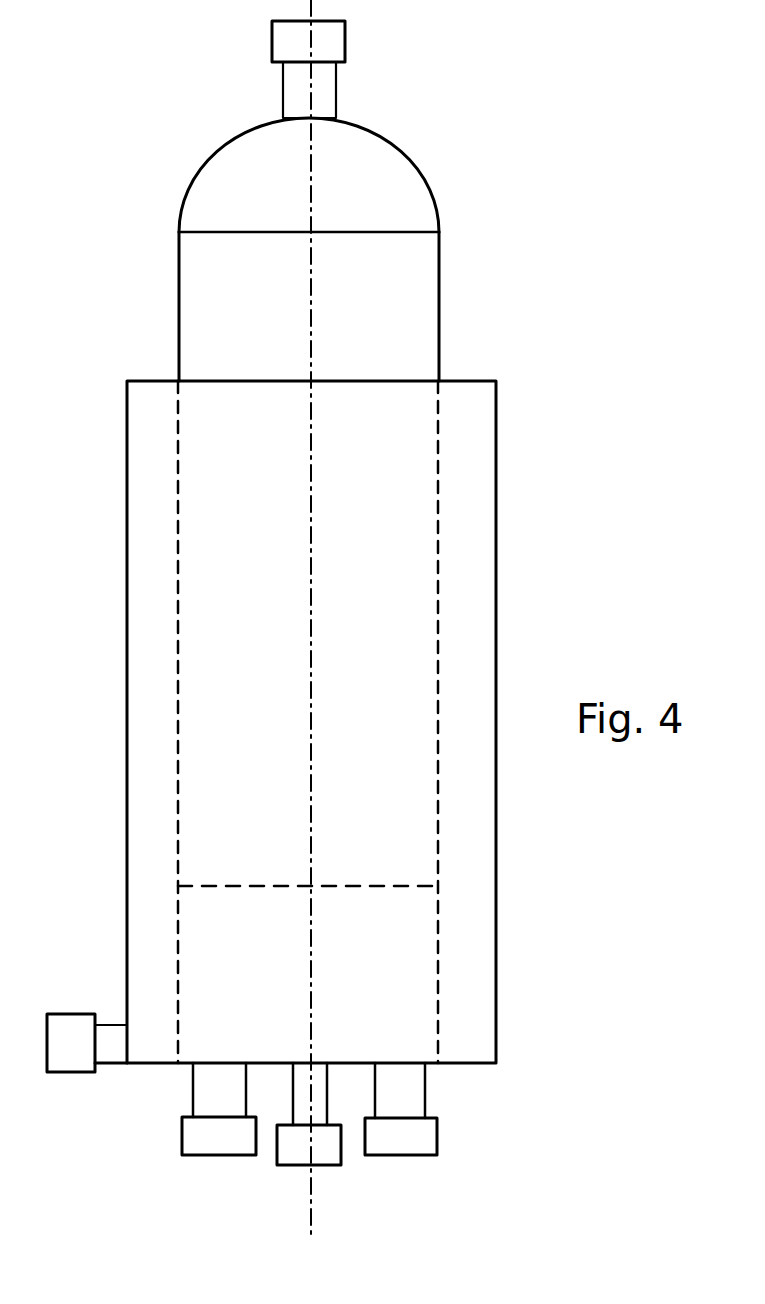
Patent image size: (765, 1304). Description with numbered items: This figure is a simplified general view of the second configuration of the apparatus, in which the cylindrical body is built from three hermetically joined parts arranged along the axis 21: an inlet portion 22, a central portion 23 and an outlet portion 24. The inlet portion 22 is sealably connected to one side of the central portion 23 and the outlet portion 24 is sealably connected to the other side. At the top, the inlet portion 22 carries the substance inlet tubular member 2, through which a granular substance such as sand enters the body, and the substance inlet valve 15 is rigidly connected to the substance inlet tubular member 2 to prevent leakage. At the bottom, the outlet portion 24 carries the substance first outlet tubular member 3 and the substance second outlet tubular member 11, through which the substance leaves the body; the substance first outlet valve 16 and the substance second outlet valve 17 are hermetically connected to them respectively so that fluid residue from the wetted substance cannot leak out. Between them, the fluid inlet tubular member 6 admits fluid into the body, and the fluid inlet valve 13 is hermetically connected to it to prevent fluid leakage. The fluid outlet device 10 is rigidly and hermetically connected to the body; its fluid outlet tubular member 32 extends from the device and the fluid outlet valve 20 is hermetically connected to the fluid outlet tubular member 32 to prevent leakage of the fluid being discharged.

The substance inlet tubular member 2 is at (326, 100).
The substance first outlet tubular member 3 is at (408, 1094).
The fluid inlet tubular member 6 is at (330, 1078).
The fluid outlet device 10 is at (496, 504).
The substance second outlet tubular member 11 is at (218, 1098).
The fluid inlet valve 13 is at (304, 1152).
The substance inlet valve 15 is at (330, 46).
The substance first outlet valve 16 is at (415, 1144).
The substance second outlet valve 17 is at (238, 1140).
The fluid outlet valve 20 is at (76, 1024).
The axis 21 is at (312, 1195).
The inlet portion 22 is at (416, 193).
The central portion 23 is at (424, 334).
The outlet portion 24 is at (418, 952).
The fluid outlet tubular member 32 is at (114, 1073).